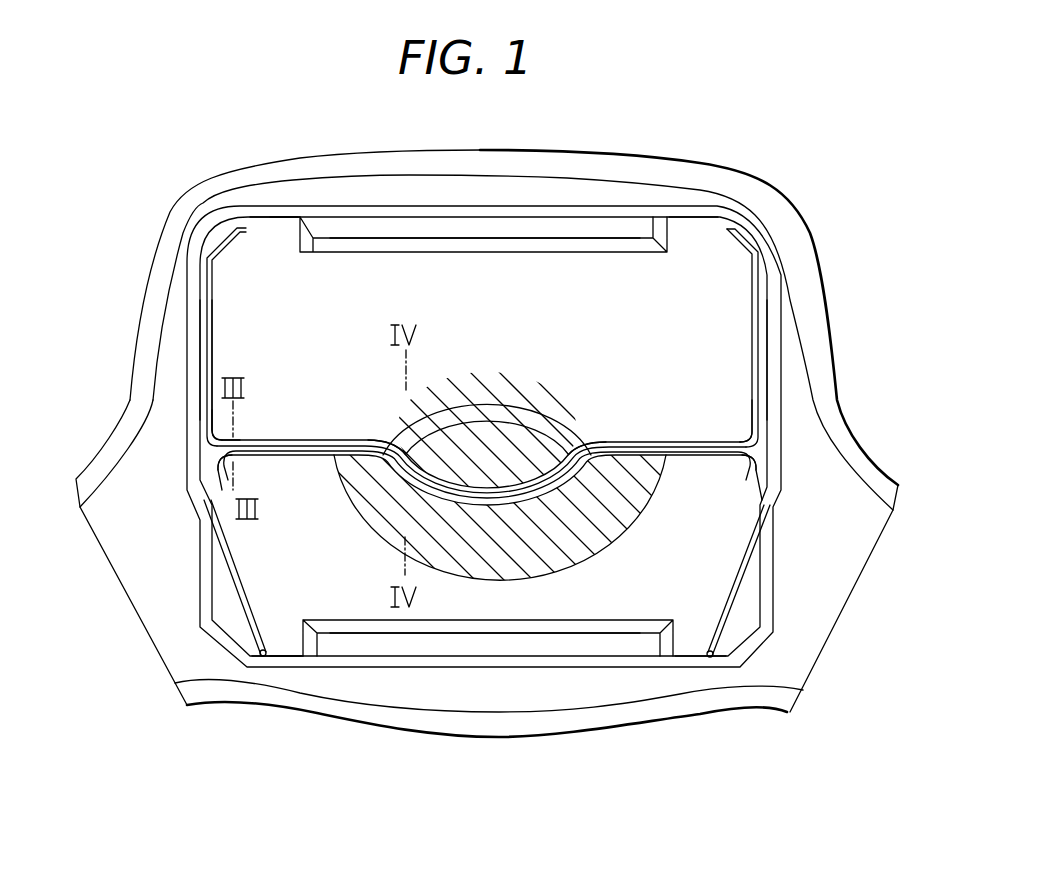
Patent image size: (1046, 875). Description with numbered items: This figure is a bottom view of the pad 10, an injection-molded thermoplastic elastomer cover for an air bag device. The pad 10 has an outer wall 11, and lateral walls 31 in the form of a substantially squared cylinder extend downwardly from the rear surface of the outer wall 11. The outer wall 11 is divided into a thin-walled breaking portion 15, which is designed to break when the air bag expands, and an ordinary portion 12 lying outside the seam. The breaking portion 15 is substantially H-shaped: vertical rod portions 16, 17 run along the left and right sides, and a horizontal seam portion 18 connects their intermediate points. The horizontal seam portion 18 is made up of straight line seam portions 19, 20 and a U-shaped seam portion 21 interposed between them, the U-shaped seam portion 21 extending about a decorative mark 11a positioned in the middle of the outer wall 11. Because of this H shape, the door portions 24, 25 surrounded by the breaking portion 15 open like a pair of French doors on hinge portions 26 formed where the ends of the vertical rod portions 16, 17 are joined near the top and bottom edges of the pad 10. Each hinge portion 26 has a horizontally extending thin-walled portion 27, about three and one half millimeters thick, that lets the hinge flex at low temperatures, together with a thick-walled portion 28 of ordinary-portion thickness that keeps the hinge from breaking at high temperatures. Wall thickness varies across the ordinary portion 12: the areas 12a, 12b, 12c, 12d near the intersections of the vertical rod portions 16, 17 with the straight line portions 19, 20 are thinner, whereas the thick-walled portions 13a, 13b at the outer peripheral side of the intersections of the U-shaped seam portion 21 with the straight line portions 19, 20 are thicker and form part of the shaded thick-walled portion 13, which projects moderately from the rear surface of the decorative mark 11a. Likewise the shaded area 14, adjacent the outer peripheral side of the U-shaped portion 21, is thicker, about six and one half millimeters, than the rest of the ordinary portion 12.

The pad 10 is at (823, 178).
The outer wall 11 is at (690, 287).
The decorative mark 11a is at (528, 402).
The ordinary portion 12 is at (372, 287).
The ordinary portion area 12a is at (743, 433).
The ordinary portion area 12b is at (742, 460).
The ordinary portion area 12c is at (227, 436).
The ordinary portion area 12d is at (227, 460).
The thick-walled portion 13 is at (487, 400).
The thick-walled portion 13a is at (565, 437).
The thick-walled portion 13b is at (400, 422).
The thick-walled area 14 is at (497, 507).
The breaking portion 15 is at (205, 380).
The vertical rod portion 16 is at (762, 360).
The vertical rod portion 17 is at (200, 343).
The horizontal seam portion 18 is at (357, 462).
The straight line seam portion 19 is at (670, 447).
The straight line seam portion 20 is at (300, 447).
The U-shaped seam portion 21 is at (522, 513).
The door portion 24 is at (553, 287).
The door portion 25 is at (620, 600).
The hinge portion 26 is at (287, 224).
The thin-walled portion 27 is at (471, 233).
The thick-walled portion 28 is at (257, 233).
The lateral walls 31 is at (772, 317).